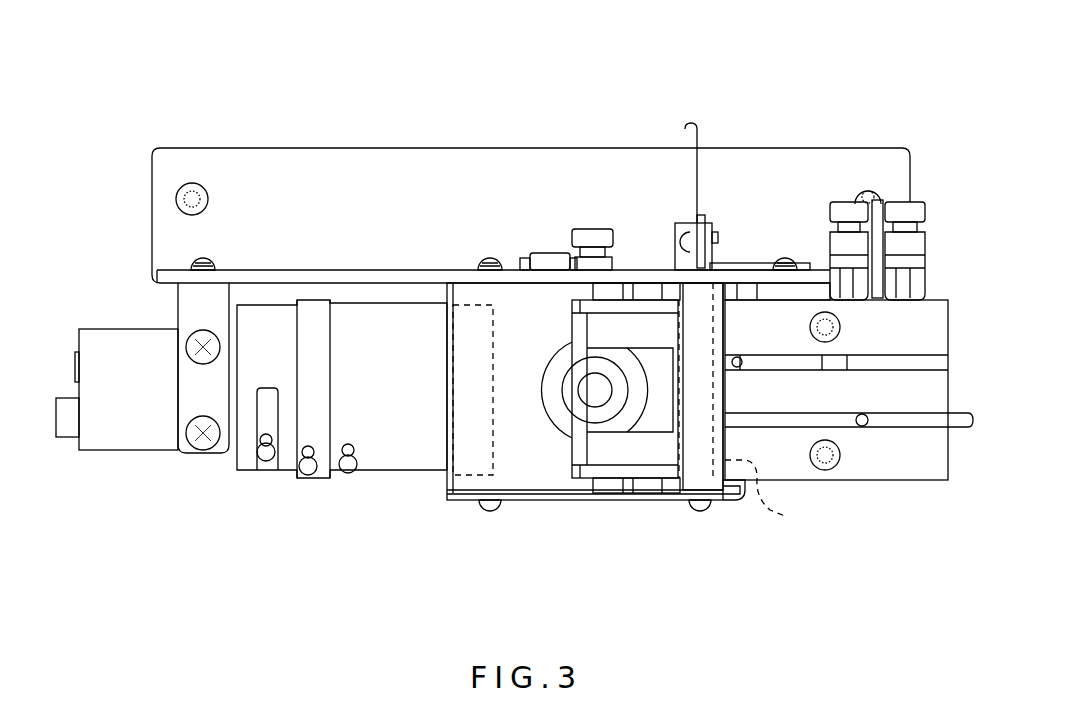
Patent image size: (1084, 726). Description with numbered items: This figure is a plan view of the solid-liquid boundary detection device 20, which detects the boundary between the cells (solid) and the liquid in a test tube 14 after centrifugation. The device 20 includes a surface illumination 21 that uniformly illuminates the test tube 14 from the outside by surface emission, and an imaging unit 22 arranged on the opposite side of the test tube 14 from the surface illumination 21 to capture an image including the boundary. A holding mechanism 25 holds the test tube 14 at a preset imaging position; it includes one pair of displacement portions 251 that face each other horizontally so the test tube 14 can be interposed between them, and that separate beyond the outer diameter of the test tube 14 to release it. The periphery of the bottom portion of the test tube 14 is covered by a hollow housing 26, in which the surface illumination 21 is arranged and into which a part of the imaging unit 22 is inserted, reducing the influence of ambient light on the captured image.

The solid-liquid boundary detection device 20 is at (765, 82).
The surface illumination 21 is at (774, 496).
The imaging unit 22 is at (397, 465).
The holding mechanism 25 is at (900, 480).
The housing 26 is at (527, 487).
The displacement portions 251 is at (650, 318).
The test tube 14 is at (563, 351).